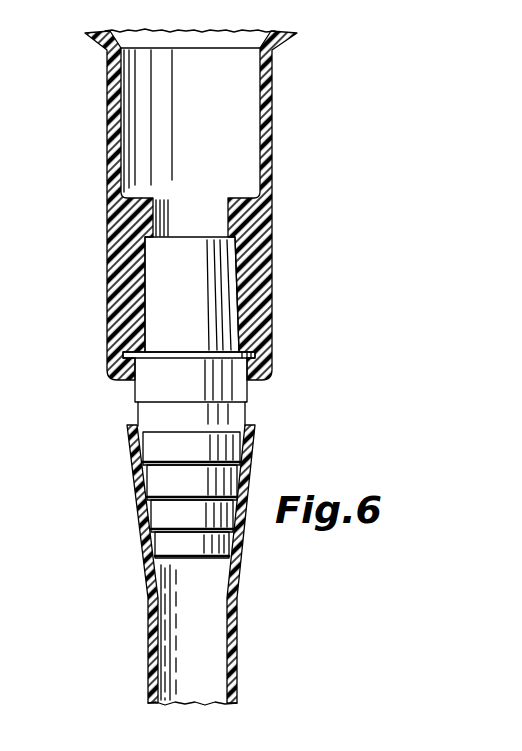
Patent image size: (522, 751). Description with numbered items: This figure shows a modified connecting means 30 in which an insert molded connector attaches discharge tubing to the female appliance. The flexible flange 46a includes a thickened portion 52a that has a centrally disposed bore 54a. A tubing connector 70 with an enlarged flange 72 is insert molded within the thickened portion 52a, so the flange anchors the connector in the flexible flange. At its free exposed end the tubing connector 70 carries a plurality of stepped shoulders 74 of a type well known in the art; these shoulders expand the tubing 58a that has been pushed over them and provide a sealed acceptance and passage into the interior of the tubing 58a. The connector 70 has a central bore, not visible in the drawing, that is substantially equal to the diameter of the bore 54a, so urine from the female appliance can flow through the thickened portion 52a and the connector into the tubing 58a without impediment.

The connector assembly 30 is at (301, 49).
The flexible flange 46a is at (273, 105).
The thickened portion 52a is at (273, 292).
The centrally disposed bore 54a is at (222, 218).
The tubing 58a is at (240, 652).
The tubing connector 70 is at (157, 313).
The enlarged flange 72 is at (158, 370).
The stepped shoulders 74 is at (155, 445).